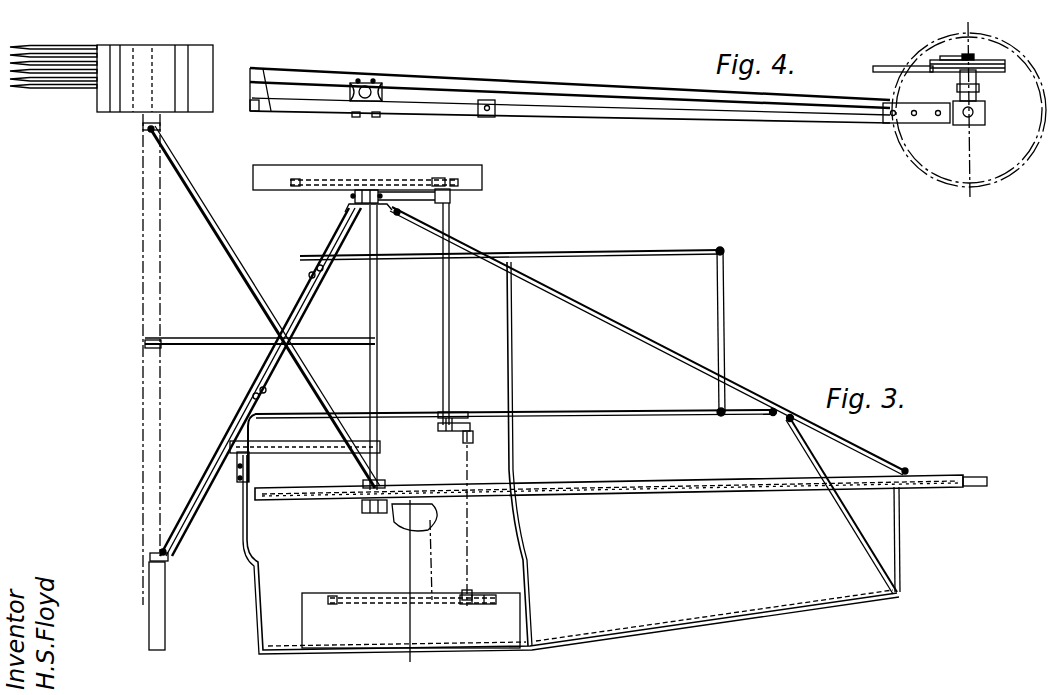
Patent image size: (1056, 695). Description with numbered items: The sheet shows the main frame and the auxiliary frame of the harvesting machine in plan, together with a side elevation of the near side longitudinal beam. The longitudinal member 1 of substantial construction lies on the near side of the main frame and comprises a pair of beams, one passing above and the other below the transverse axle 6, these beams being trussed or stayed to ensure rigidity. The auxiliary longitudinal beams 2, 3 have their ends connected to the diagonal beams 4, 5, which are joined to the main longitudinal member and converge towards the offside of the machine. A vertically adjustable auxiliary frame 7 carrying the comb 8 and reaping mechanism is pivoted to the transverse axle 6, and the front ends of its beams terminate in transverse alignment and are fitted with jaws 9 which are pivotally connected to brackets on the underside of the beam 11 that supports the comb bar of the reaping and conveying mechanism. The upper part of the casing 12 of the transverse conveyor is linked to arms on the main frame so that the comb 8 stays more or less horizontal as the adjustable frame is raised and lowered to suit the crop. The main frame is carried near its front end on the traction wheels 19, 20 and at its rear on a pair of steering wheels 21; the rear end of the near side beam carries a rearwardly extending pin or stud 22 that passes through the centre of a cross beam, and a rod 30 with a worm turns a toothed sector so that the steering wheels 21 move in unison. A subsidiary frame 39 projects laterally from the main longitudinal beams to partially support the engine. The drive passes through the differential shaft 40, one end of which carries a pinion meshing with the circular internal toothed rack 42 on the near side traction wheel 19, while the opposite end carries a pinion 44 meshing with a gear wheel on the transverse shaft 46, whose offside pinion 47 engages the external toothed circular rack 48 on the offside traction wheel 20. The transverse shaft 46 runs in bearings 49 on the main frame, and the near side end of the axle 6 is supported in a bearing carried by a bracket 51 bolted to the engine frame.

In FIG. 4, the longitudinal member 1 is at (446, 100).
In FIG. 3, the longitudinal member 1 is at (568, 488).
In FIG. 3, the auxiliary longitudinal beam 2 is at (584, 412).
In FIG. 3, the auxiliary longitudinal beam 3 is at (602, 252).
In FIG. 3, the diagonal beam 4 is at (648, 334).
In FIG. 3, the diagonal beam 5 is at (318, 244).
In FIG. 4, the transverse axle 6 is at (367, 82).
In FIG. 3, the transverse axle 6 is at (378, 312).
In FIG. 3, the vertically adjustable auxiliary frame 7 is at (244, 268).
In FIG. 3, the comb 8 is at (52, 88).
In FIG. 3, the jaws 9 is at (143, 129).
In FIG. 3, the beam 11 is at (143, 468).
In FIG. 3, the casing 12 is at (155, 78).
In FIG. 3, the traction wheel 19 is at (411, 620).
In FIG. 3, the traction wheel 20 is at (483, 170).
In FIG. 4, the steering wheels 21 is at (1001, 183).
In FIG. 3, the rearwardly extending pin or stud 22 is at (976, 480).
In FIG. 4, the rod 30 is at (878, 68).
In FIG. 3, the subsidiary frame 39 is at (262, 576).
In FIG. 3, the differential shaft 40 is at (472, 442).
In FIG. 3, the circular internal toothed rack 42 is at (342, 598).
In FIG. 3, the pinion 44 is at (472, 430).
In FIG. 3, the transverse shaft 46 is at (450, 352).
In FIG. 3, the pinion 47 is at (440, 178).
In FIG. 3, the external toothed circular rack 48 is at (298, 180).
In FIG. 3, the bearings 49 is at (452, 197).
In FIG. 3, the bracket 51 is at (380, 514).